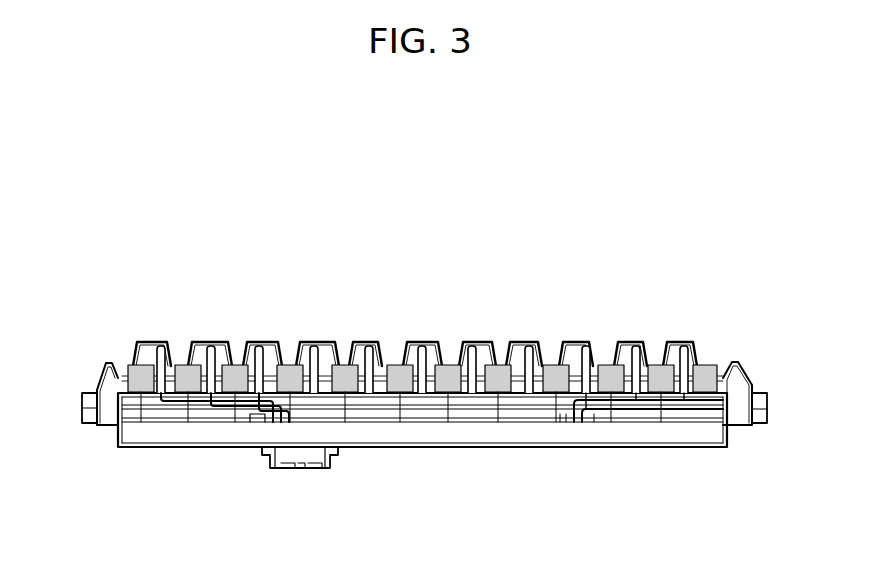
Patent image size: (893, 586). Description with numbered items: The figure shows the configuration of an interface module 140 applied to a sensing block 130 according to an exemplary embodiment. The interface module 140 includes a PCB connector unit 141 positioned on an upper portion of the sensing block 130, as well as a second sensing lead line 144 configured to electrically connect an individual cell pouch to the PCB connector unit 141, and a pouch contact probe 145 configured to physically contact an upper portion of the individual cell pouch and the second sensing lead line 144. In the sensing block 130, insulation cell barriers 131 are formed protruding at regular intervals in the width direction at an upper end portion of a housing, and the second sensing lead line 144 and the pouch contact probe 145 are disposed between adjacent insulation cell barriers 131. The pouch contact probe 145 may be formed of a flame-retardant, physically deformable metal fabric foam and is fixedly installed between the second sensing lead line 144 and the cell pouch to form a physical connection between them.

The sensing block 130 is at (100, 355).
The insulation cell barrier 131 is at (417, 353).
The interface module 140 is at (384, 460).
The PCB connector unit 141 is at (273, 470).
The second sensing lead line 144 is at (607, 394).
The pouch contact probe 145 is at (658, 360).